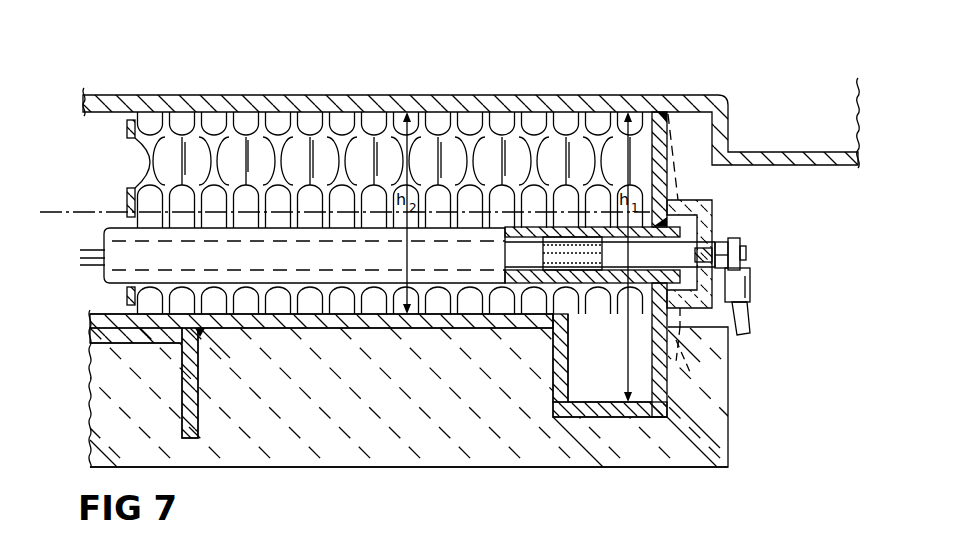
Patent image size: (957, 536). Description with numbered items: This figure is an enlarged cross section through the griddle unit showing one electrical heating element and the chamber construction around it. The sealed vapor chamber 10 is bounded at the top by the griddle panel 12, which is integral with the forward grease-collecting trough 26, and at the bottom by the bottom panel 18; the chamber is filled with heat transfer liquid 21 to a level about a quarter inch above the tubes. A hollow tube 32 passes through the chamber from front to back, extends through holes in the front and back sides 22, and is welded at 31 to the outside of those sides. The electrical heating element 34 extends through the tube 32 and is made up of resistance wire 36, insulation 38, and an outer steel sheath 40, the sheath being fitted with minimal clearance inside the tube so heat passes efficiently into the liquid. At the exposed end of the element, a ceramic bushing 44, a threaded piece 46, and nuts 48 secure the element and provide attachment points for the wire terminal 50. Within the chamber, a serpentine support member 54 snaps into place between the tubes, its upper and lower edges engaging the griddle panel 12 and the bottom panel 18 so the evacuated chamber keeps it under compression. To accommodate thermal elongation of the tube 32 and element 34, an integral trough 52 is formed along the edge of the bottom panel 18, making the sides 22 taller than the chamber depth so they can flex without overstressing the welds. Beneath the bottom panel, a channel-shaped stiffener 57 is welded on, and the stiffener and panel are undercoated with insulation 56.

The sealed vapor chamber 10 is at (471, 105).
The griddle panel 12 is at (350, 95).
The bottom panel 18 is at (344, 344).
The heat transfer liquid 21 is at (68, 212).
The front and back sides 22 is at (680, 340).
The forward grease-collecting trough 26 is at (790, 152).
The weld 31 is at (664, 224).
The hollow tube 32 is at (120, 237).
The electrical heating element 34 is at (610, 228).
The resistance wire 36 is at (546, 232).
The insulation 38 is at (577, 236).
The outer steel sheath 40 is at (601, 324).
The ceramic bushing 44 is at (712, 222).
The threaded piece 46 is at (722, 248).
The nuts 48 is at (738, 262).
The wire terminal 50 is at (752, 320).
The trough 52 is at (667, 390).
The support member 54 is at (150, 183).
The insulation 56 is at (313, 467).
The channel-shaped stiffener 57 is at (190, 380).